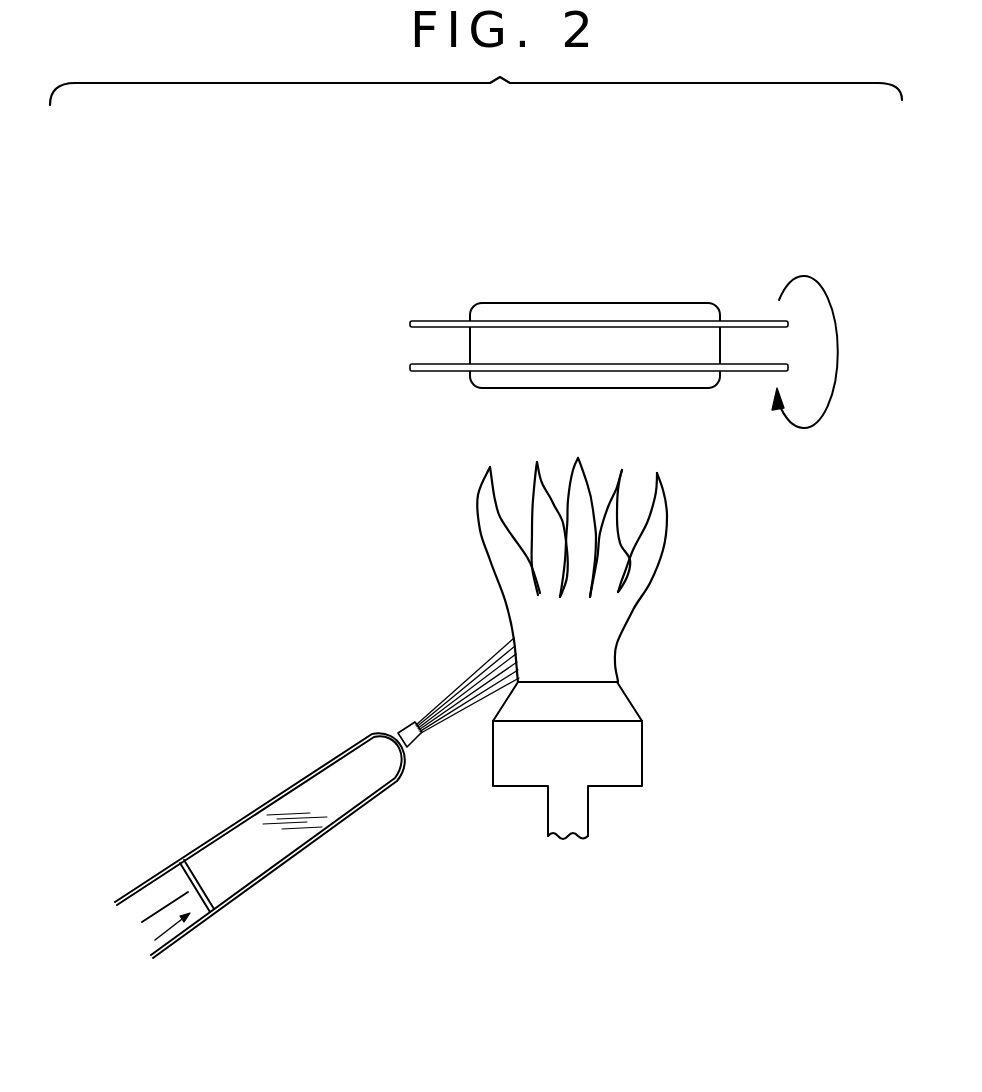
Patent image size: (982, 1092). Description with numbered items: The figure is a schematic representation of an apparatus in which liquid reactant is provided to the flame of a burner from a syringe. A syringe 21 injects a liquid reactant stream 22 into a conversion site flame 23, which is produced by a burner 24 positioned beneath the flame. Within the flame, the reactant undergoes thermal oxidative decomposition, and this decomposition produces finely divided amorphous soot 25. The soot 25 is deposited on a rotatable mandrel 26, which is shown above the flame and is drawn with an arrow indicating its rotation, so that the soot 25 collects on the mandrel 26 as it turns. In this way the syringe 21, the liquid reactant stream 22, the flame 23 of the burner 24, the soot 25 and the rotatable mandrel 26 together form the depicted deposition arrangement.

The syringe 21 is at (355, 732).
The liquid reactant stream 22 is at (495, 665).
The conversion site flame 23 is at (612, 616).
The burner 24 is at (630, 750).
The amorphous soot 25 is at (490, 380).
The rotatable mandrel 26 is at (438, 342).